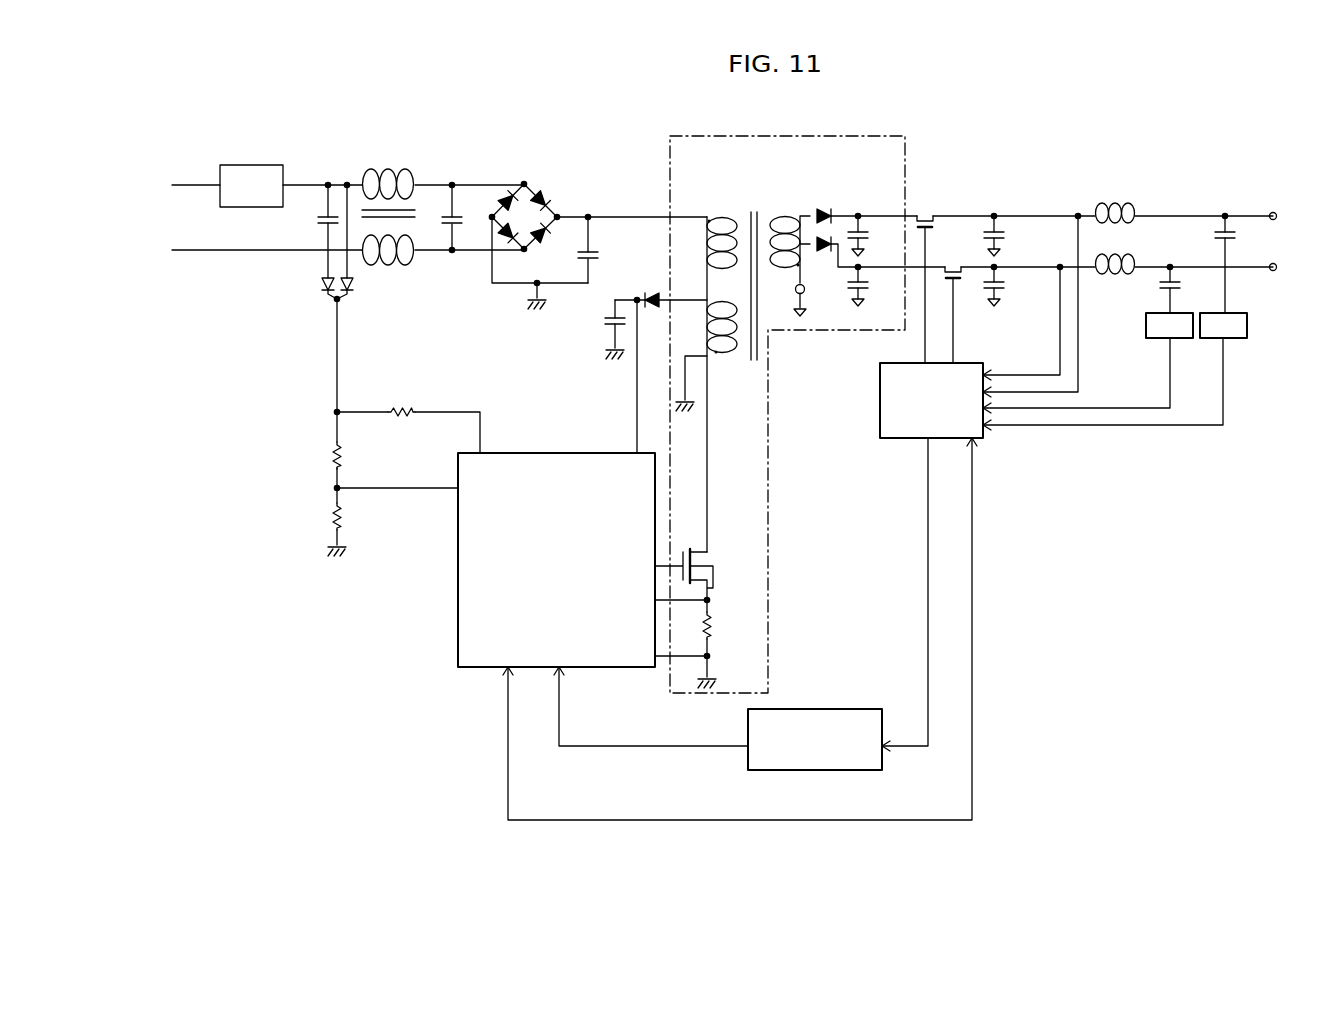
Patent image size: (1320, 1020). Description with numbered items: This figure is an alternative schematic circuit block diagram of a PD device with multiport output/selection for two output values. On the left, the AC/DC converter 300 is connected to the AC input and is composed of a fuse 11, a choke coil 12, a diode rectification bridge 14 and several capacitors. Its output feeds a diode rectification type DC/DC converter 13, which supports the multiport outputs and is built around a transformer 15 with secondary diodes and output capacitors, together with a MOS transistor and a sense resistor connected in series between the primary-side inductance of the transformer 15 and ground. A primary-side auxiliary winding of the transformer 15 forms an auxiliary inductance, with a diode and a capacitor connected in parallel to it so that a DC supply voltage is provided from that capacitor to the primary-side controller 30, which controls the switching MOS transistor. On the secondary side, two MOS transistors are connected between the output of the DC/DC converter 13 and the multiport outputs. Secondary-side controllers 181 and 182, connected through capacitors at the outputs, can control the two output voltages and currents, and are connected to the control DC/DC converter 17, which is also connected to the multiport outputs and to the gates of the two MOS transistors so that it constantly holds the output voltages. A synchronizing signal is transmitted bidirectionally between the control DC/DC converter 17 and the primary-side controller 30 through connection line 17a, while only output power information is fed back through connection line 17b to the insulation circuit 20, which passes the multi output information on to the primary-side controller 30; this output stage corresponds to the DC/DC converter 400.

The fuse 11 is at (268, 164).
The choke coil 12 is at (413, 163).
The DC/DC converter 13 is at (668, 158).
The diode rectification bridge 14 is at (531, 185).
The transformer 15 is at (752, 194).
The control DC/DC converter 17 is at (893, 440).
The connection line 17a is at (974, 745).
The connection line 17b is at (931, 643).
The insulation circuit 20 is at (817, 708).
The primary-side controller 30 is at (458, 579).
The secondary-side controller 181 is at (1240, 340).
The secondary-side controller 182 is at (1187, 340).
The AC/DC converter 300 is at (537, 116).
The DC/DC converter 400 is at (997, 118).